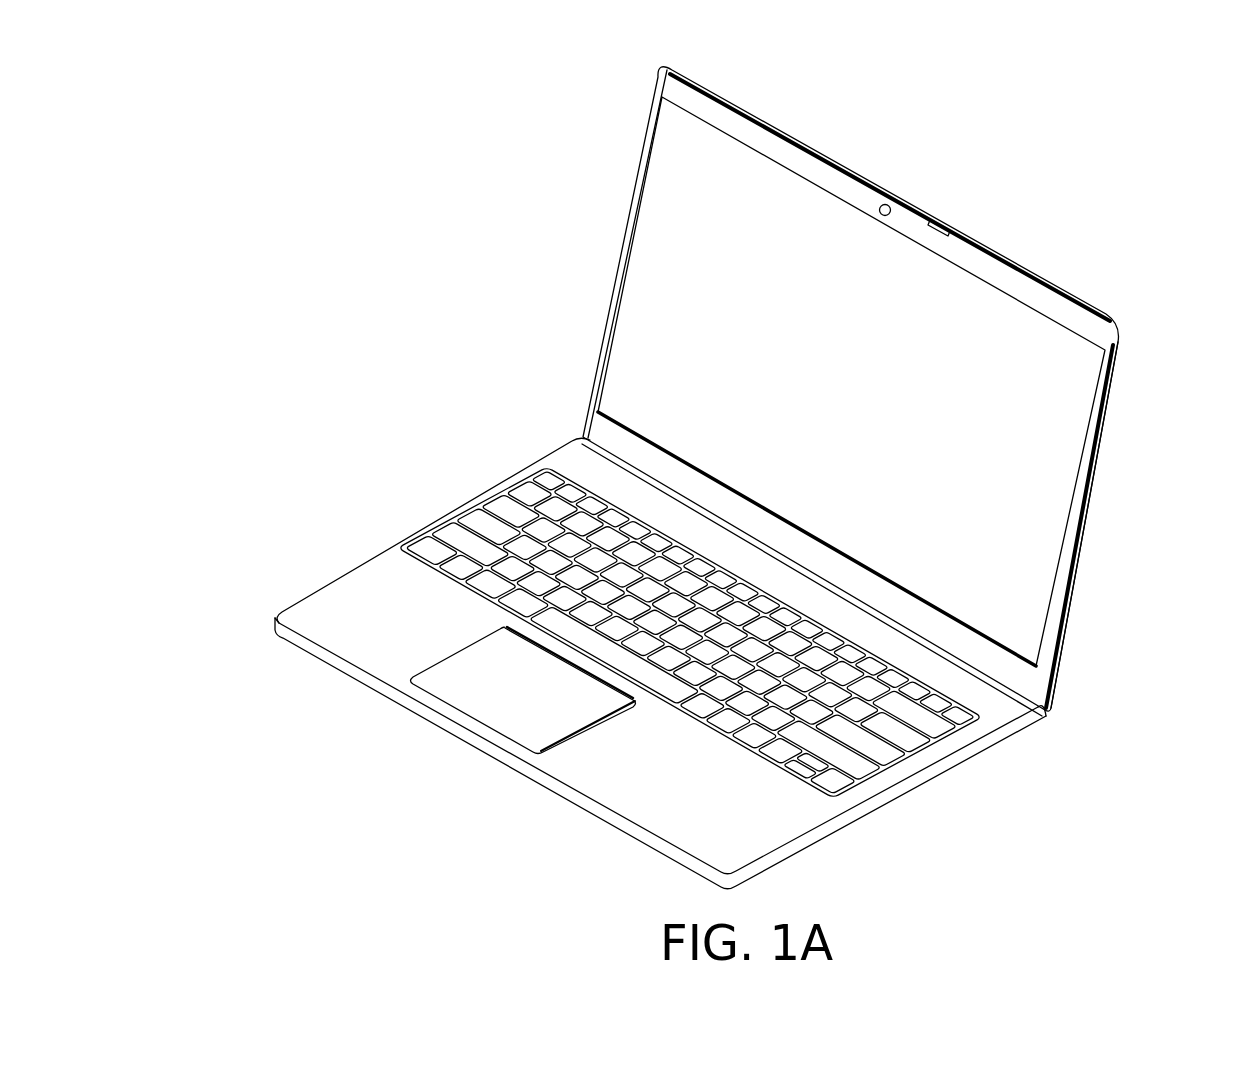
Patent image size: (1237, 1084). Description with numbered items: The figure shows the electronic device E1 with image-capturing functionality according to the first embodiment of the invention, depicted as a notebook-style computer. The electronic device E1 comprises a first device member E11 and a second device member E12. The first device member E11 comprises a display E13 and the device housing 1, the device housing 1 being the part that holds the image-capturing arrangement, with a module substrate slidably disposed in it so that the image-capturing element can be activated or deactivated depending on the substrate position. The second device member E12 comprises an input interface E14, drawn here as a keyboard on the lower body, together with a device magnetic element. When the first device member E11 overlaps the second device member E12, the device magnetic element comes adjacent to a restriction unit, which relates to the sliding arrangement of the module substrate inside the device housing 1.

The electronic device E1 is at (246, 69).
The first device member E11 is at (621, 257).
The second device member E12 is at (360, 578).
The display E13 is at (1063, 448).
The input interface E14 is at (498, 502).
The device housing 1 is at (1041, 276).